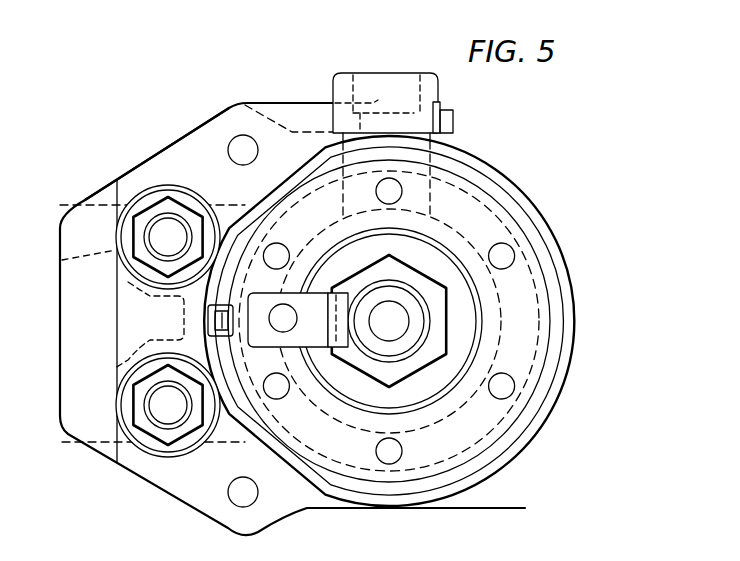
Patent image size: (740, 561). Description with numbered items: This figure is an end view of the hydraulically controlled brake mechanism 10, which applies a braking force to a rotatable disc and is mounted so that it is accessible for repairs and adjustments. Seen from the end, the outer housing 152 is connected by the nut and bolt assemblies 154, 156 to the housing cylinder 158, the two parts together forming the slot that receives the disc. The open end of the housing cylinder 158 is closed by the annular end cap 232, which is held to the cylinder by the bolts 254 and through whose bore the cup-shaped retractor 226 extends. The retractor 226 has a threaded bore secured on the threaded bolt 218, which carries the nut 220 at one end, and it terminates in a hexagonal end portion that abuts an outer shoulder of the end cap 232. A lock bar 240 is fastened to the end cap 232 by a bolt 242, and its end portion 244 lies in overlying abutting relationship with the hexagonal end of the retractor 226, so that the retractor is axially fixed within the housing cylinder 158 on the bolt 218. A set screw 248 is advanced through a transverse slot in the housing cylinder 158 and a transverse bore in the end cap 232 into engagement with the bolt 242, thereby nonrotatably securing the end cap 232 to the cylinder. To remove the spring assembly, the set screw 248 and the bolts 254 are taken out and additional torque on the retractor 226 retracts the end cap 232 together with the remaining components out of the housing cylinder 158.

The brake mechanism 10 is at (98, 461).
The outer housing 152 is at (77, 240).
The nut and bolt assembly 154 is at (187, 428).
The nut and bolt assembly 156 is at (186, 218).
The housing cylinder 158 is at (167, 149).
The threaded bolt 218 is at (373, 331).
The nut 220 is at (406, 299).
The retractor 226 is at (448, 311).
The annular end cap 232 is at (358, 384).
The lock bar 240 is at (263, 338).
The bolt 242 is at (288, 329).
The lock bar end portion 244 is at (339, 303).
The set screw 248 is at (210, 321).
The bolts 254 is at (490, 247).